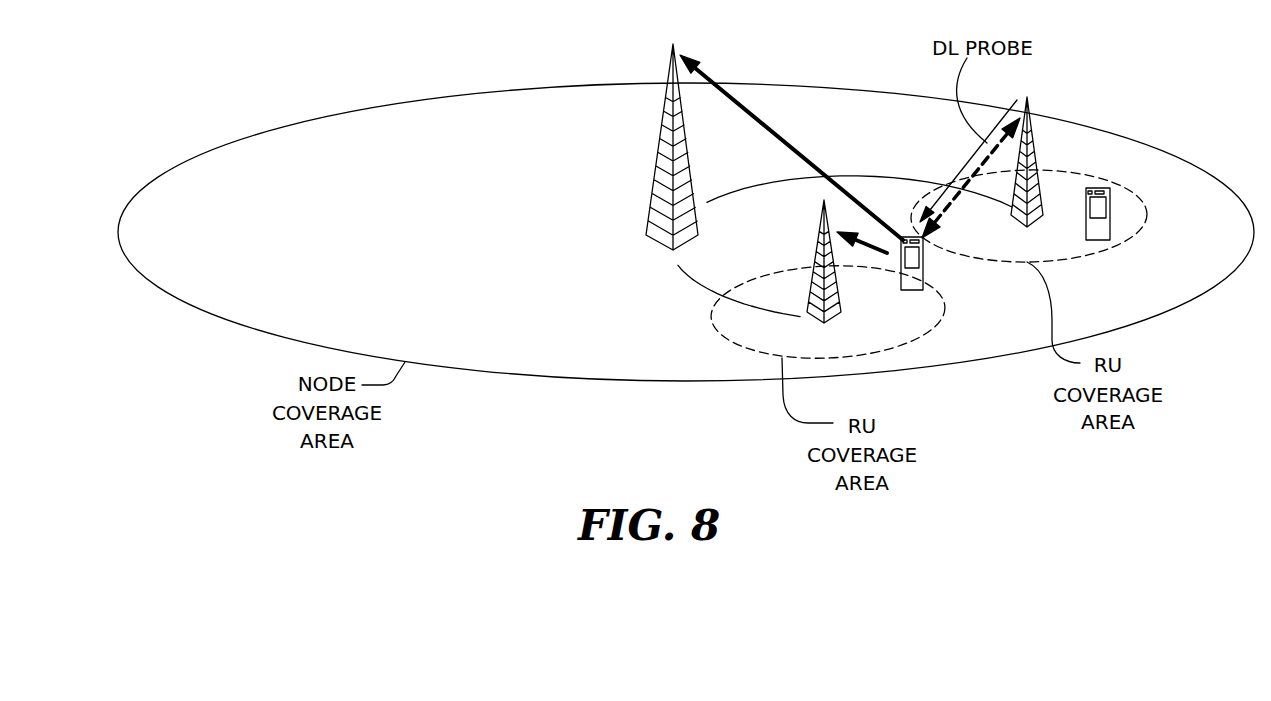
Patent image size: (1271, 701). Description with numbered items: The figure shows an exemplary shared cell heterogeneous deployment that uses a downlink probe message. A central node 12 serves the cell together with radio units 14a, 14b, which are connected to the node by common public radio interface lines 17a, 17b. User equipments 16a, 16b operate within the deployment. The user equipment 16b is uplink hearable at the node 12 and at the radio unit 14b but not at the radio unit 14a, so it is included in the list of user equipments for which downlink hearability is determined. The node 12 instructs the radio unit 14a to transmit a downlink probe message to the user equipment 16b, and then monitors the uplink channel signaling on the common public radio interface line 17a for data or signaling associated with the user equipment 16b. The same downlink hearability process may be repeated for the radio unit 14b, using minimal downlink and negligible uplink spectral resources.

The node 12 is at (661, 136).
The radio unit 14a is at (1030, 132).
The radio unit 14b is at (819, 245).
The user equipment 16a is at (1110, 222).
The user equipment 16b is at (923, 275).
The common public radio interface line 17a is at (912, 193).
The common public radio interface line 17b is at (693, 280).